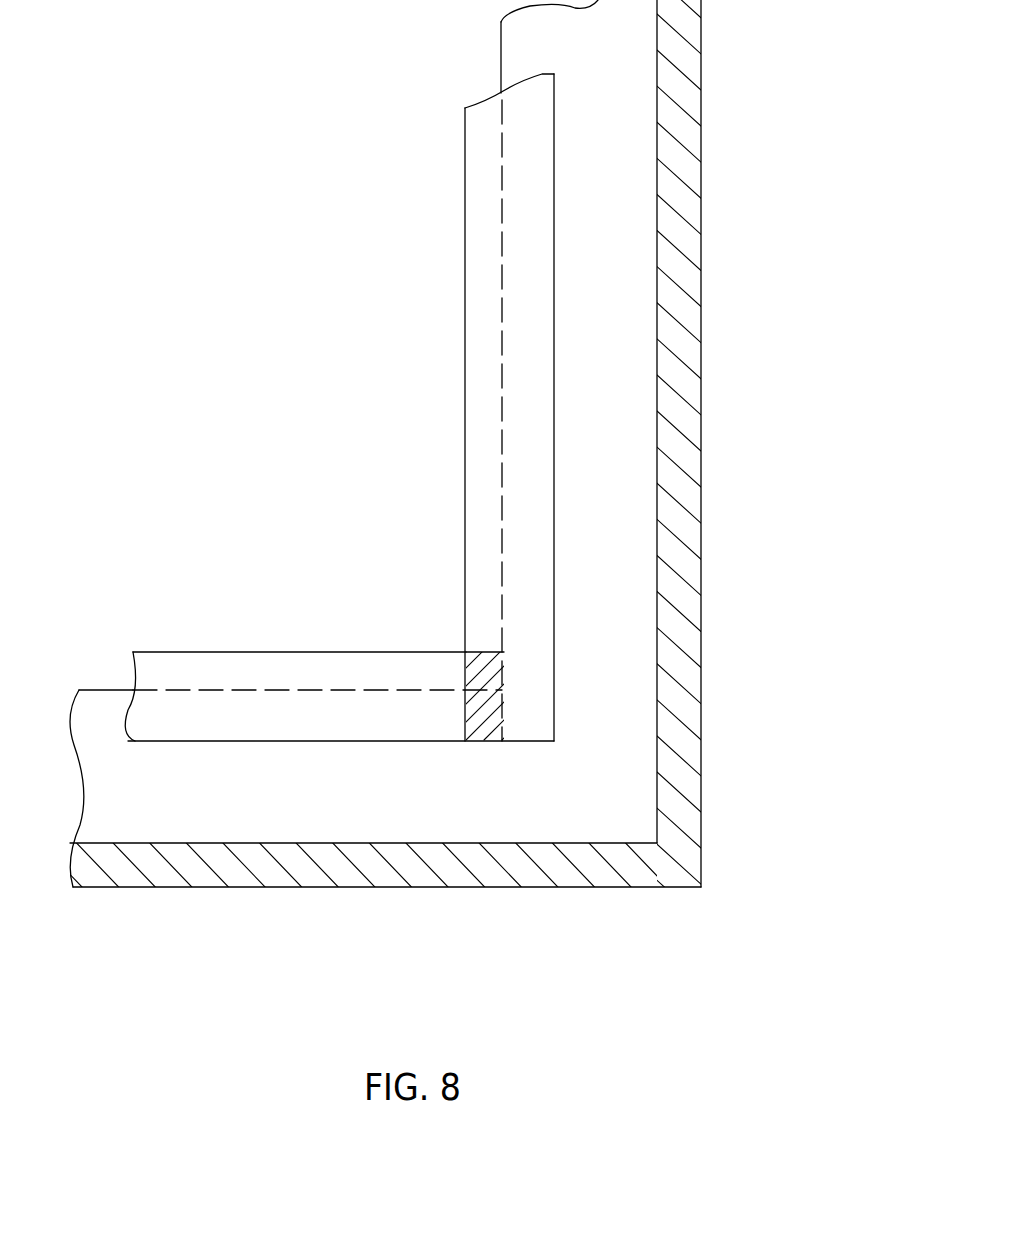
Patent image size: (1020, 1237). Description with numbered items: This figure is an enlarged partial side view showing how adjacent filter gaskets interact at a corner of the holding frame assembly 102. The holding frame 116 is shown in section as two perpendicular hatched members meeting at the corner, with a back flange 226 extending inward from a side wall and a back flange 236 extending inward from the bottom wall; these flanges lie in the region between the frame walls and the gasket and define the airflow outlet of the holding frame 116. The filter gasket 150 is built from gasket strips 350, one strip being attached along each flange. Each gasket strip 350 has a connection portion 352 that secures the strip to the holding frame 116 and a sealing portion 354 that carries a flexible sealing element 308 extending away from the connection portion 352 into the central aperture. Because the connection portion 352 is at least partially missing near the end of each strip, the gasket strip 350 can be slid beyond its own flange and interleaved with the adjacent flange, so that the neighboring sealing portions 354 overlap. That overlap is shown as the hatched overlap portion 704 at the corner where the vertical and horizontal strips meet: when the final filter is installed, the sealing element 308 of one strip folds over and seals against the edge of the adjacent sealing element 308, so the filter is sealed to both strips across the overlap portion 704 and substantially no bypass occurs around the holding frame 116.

The holding frame assembly 102 is at (728, 150).
The holding frame 116 is at (702, 792).
The filter gasket 150 is at (428, 480).
The back flange of side wall 226 is at (629, 493).
The back flange of bottom wall 236 is at (348, 812).
The sealing element 308 is at (456, 517).
The gasket strip 350 is at (463, 182).
The connection portion 352 is at (457, 517).
The sealing portion 354 is at (486, 412).
The overlap portion 704 is at (480, 715).